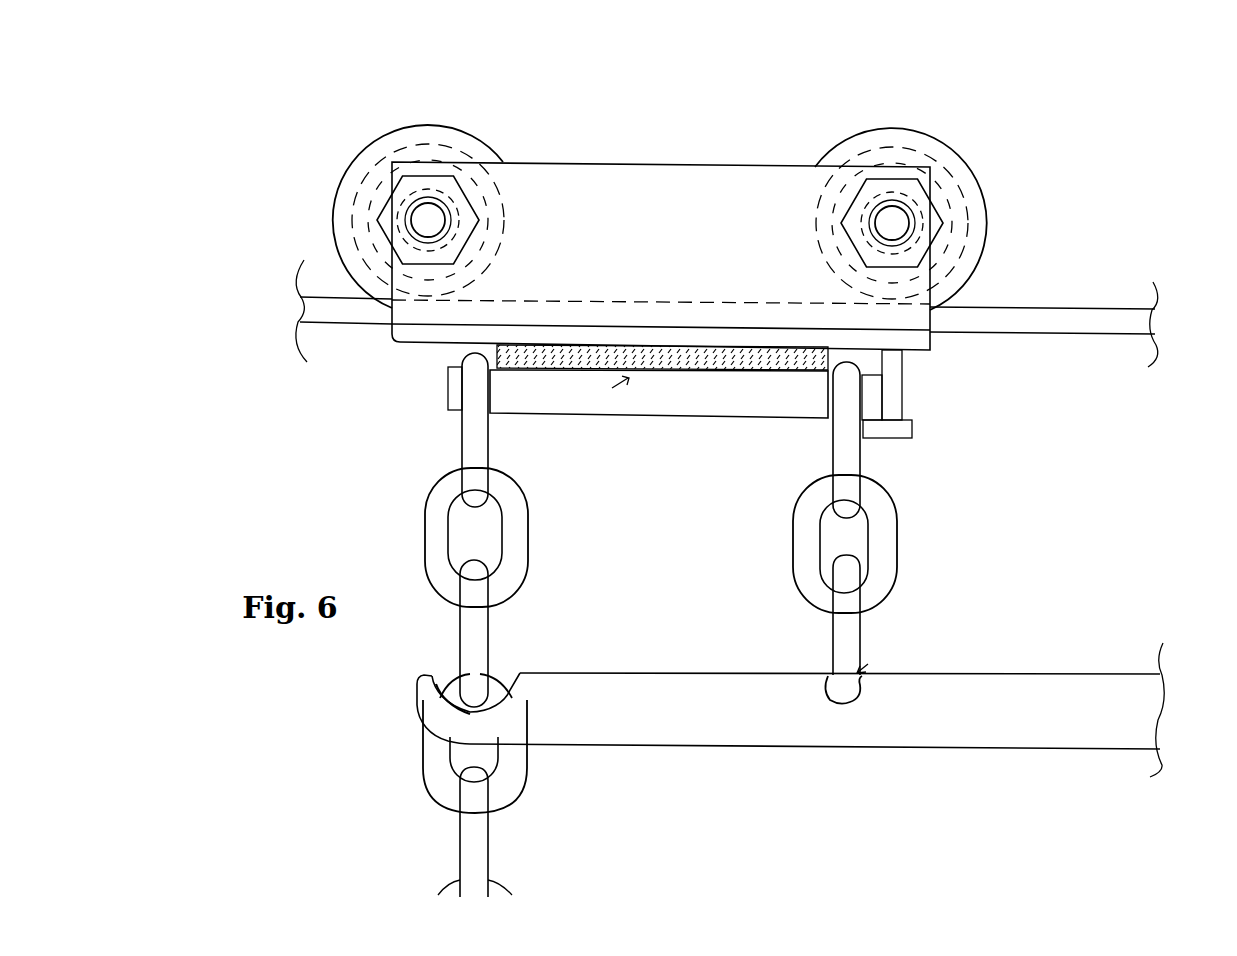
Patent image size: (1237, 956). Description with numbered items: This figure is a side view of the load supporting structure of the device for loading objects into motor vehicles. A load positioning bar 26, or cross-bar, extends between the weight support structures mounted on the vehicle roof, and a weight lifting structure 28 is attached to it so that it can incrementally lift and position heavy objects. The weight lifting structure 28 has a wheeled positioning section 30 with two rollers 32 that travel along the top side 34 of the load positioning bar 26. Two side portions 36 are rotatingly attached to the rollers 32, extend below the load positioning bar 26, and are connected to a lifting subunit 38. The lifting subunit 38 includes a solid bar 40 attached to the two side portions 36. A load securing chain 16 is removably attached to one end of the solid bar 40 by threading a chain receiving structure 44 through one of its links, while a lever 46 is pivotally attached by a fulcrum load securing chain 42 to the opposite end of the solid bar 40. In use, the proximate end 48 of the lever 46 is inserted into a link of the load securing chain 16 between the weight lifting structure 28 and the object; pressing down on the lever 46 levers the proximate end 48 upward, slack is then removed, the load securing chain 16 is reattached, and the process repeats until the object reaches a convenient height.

The load securing chain 16 is at (435, 773).
The load positioning bar 26 is at (1082, 320).
The weight lifting structure 28 is at (1034, 153).
The wheeled positioning section 30 is at (262, 231).
The rollers 32 is at (472, 142).
The top side 34 is at (1045, 308).
The side portions 36 is at (905, 292).
The lifting subunit 38 is at (632, 432).
The solid bar 40 is at (722, 395).
The fulcrum load securing chain 42 is at (890, 548).
The chain receiving structure 44 is at (440, 388).
The lever 46 is at (975, 728).
The proximate end 48 is at (558, 718).